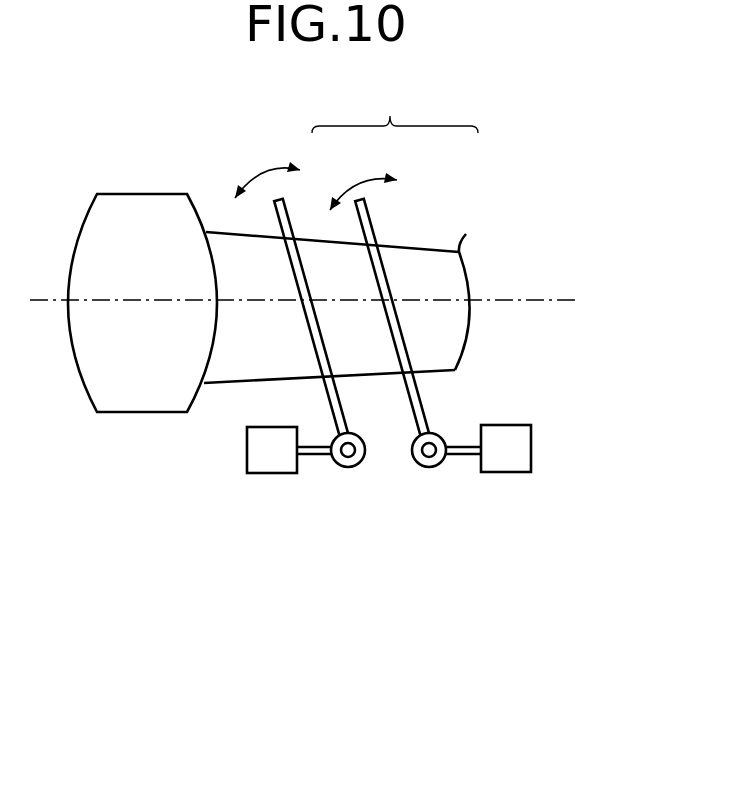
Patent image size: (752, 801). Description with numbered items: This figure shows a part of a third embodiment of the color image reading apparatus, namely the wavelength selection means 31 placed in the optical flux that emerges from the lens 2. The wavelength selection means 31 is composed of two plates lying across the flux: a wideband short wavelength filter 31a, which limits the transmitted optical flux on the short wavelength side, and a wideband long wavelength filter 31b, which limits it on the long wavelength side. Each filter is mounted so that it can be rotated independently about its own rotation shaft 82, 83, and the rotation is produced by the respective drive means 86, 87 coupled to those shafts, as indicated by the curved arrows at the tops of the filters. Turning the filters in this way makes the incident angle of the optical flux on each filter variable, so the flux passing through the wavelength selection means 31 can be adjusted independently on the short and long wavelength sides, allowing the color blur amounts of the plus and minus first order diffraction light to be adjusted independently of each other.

The lens 2 is at (160, 205).
The wavelength selection means 31 is at (395, 103).
The wideband short wavelength filter 31a is at (286, 203).
The wideband long wavelength filter 31b is at (370, 212).
The rotation shaft 82 is at (353, 455).
The rotation shaft 83 is at (432, 455).
The drive means 86 is at (270, 463).
The drive means 87 is at (523, 446).